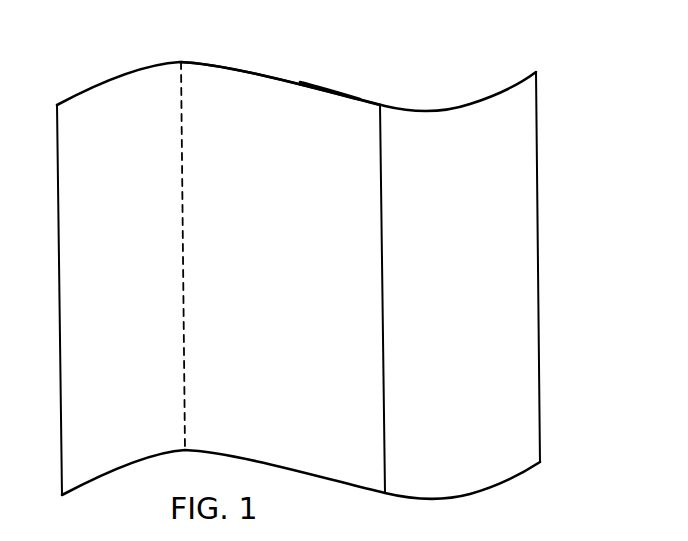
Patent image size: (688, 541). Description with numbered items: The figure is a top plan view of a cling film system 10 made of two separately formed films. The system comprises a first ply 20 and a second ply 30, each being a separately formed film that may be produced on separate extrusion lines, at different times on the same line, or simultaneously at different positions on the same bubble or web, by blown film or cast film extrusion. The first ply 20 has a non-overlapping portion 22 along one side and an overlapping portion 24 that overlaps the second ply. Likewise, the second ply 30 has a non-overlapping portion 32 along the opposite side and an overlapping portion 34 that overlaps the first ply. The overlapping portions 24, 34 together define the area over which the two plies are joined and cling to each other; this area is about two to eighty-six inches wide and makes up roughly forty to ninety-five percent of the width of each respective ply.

The cling film system 10 is at (565, 472).
The first ply 20 is at (88, 88).
The non-overlapping portion 22 is at (137, 69).
The overlapping portion 24 is at (255, 65).
The second ply 30 is at (455, 110).
The non-overlapping portion 32 is at (512, 87).
The overlapping portion 34 is at (322, 82).